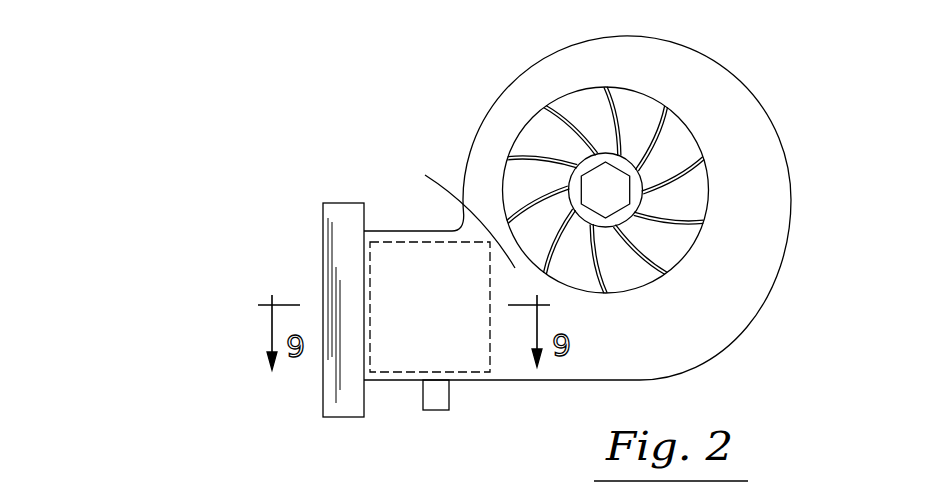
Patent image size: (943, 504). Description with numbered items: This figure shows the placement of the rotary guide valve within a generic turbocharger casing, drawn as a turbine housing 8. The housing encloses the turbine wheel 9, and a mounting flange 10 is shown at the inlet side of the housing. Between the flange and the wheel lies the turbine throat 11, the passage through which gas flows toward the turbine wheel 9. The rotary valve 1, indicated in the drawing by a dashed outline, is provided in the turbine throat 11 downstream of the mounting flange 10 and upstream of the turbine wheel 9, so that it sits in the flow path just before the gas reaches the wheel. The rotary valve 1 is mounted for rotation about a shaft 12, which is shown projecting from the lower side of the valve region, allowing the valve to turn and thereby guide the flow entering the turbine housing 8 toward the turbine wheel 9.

The rotary valve 1 is at (478, 355).
The turbine housing 8 is at (747, 135).
The turbine wheel 9 is at (680, 203).
The mounting flange 10 is at (338, 206).
The turbine throat 11 is at (455, 216).
The shaft 12 is at (447, 412).